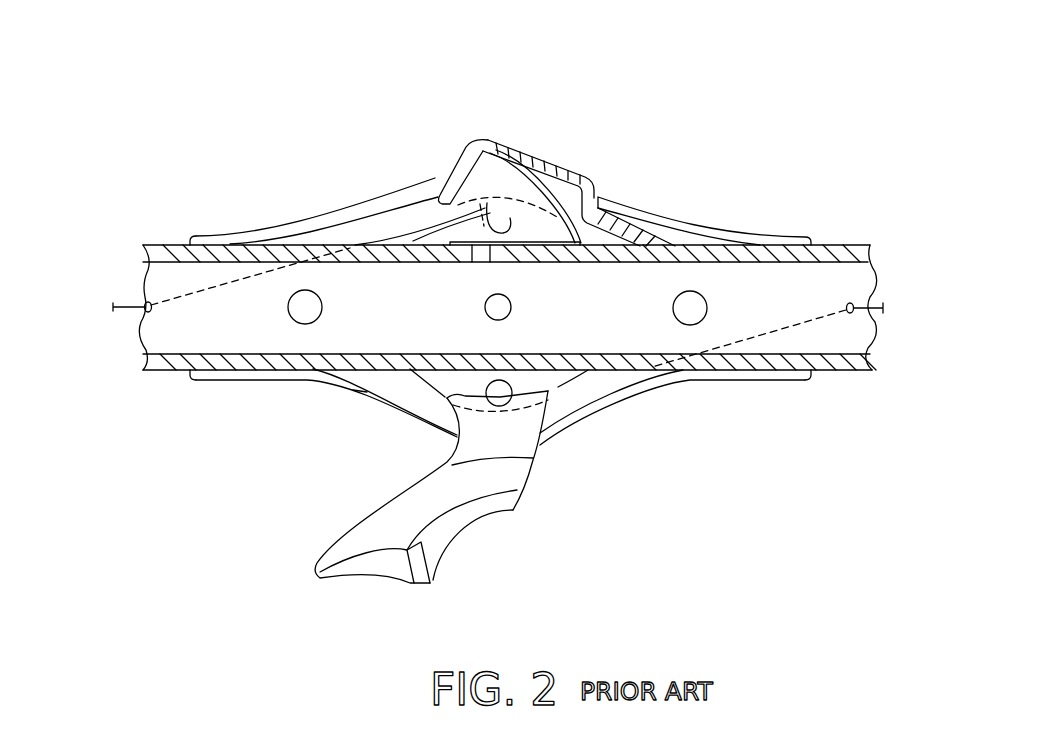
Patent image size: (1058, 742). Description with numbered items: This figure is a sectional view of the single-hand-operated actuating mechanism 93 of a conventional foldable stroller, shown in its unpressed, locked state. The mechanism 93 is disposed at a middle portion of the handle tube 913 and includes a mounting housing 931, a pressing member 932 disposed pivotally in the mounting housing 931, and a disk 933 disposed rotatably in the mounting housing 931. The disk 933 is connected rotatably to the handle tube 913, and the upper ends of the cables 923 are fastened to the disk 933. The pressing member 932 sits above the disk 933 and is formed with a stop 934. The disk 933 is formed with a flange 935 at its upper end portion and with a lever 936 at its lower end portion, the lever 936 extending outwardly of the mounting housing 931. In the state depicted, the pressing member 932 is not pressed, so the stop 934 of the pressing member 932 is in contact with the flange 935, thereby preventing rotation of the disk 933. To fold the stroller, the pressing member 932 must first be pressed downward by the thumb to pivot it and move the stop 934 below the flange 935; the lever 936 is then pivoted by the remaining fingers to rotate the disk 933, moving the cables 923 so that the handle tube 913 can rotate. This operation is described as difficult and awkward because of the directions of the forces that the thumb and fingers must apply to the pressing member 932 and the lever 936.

The single-hand-operated actuating mechanism 93 is at (545, 92).
The handle tube 913 is at (842, 247).
The cables 923 is at (127, 302).
The mounting housing 931 is at (290, 224).
The pressing member 932 is at (490, 138).
The disk 933 is at (558, 385).
The stop 934 is at (525, 190).
The flange 935 is at (430, 223).
The lever 936 is at (467, 512).